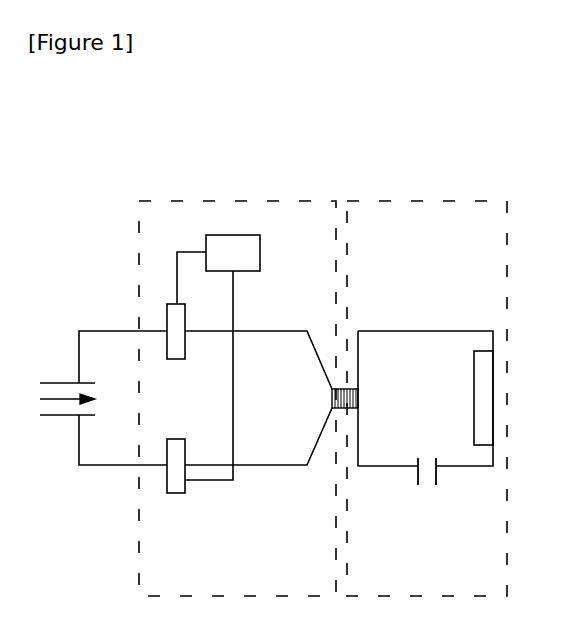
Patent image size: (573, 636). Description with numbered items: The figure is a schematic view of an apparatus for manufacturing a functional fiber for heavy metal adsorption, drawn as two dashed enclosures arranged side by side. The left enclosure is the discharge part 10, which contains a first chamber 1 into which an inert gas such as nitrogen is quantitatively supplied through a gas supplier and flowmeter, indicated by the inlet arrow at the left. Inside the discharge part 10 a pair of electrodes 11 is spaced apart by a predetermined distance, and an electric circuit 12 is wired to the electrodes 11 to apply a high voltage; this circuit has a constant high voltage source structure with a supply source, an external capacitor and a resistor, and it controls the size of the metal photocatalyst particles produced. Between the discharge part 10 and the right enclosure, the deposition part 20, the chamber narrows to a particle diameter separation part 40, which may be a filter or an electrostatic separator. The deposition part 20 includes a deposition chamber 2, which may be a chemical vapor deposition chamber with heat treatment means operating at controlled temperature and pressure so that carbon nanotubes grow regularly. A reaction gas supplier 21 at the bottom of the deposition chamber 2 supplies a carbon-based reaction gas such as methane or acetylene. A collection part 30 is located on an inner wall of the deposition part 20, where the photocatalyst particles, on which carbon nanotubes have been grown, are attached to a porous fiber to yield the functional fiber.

The first chamber 1 is at (107, 466).
The deposition chamber 2 is at (425, 331).
The discharge part 10 is at (190, 201).
The electrodes 11 is at (167, 314).
The electric circuit 12 is at (233, 235).
The deposition part 20 is at (396, 201).
The reaction gas supplier 21 is at (437, 475).
The collection part 30 is at (480, 350).
The particle diameter separation part 40 is at (358, 398).